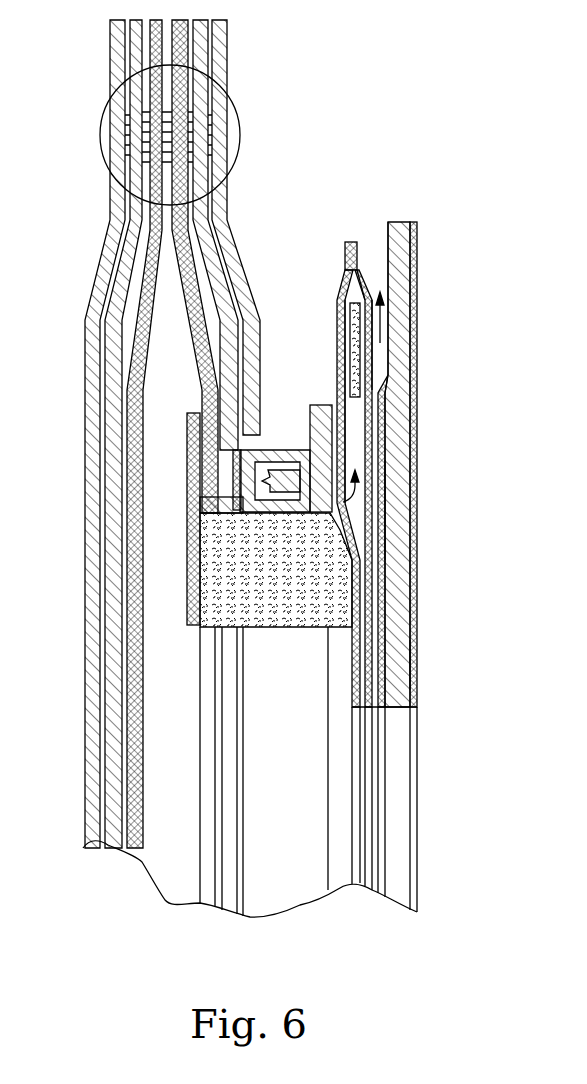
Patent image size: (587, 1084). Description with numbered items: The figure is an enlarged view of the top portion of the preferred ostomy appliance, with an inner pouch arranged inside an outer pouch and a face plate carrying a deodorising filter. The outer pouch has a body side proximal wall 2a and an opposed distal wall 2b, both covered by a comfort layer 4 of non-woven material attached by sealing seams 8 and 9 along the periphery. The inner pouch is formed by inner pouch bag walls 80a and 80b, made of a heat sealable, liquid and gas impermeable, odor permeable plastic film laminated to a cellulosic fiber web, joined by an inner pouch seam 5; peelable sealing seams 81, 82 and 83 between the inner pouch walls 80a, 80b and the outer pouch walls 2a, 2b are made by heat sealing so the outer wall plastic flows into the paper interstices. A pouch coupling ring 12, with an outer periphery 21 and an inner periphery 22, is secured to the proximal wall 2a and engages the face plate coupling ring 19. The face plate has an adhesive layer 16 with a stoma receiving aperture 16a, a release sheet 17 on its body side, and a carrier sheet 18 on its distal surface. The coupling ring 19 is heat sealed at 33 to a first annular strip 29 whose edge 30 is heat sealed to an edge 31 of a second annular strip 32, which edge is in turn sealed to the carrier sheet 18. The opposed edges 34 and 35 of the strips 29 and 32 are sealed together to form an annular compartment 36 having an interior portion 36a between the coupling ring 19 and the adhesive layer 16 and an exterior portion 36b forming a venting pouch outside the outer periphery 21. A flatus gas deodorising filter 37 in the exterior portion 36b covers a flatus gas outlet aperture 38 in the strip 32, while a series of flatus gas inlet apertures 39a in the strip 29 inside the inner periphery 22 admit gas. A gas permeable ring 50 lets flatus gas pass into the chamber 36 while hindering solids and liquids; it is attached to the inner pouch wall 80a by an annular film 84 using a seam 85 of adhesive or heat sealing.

The proximal wall 2a is at (226, 202).
The distal wall 2b is at (92, 337).
The comfort layer 4 is at (228, 243).
The inner pouch seam 5 is at (213, 90).
The sealing seam 8 is at (228, 108).
The sealing seam 9 is at (130, 97).
The pouch coupling ring 12 is at (268, 450).
The adhesive layer 16 is at (415, 630).
The stoma receiving aperture 16a is at (415, 717).
The release sheet 17 is at (415, 513).
The carrier sheet 18 is at (405, 388).
The face plate coupling ring 19 is at (325, 405).
The outer periphery 21 is at (302, 452).
The inner periphery 22 is at (335, 625).
The first annular strip 29 is at (337, 305).
The edge 30 is at (352, 690).
The edge 31 is at (415, 690).
The second annular strip 32 is at (367, 302).
The heat seal 33 is at (345, 455).
The edge 34 is at (342, 268).
The edge 35 is at (358, 303).
The annular compartment 36 is at (348, 423).
The interior portion 36a is at (380, 497).
The exterior portion 36b is at (367, 287).
The flatus gas deodorising filter 37 is at (373, 315).
The flatus gas outlet aperture 38 is at (400, 352).
The flatus gas inlet apertures 39a is at (415, 540).
The ring 50 is at (415, 652).
The inner pouch bag wall 80a is at (130, 222).
The inner pouch bag wall 80b is at (143, 280).
The peelable sealing seam 81 is at (212, 147).
The peelable sealing seam 82 is at (150, 148).
The peelable sealing seam 83 is at (195, 518).
The annular film 84 is at (187, 493).
The seam 85 is at (187, 440).